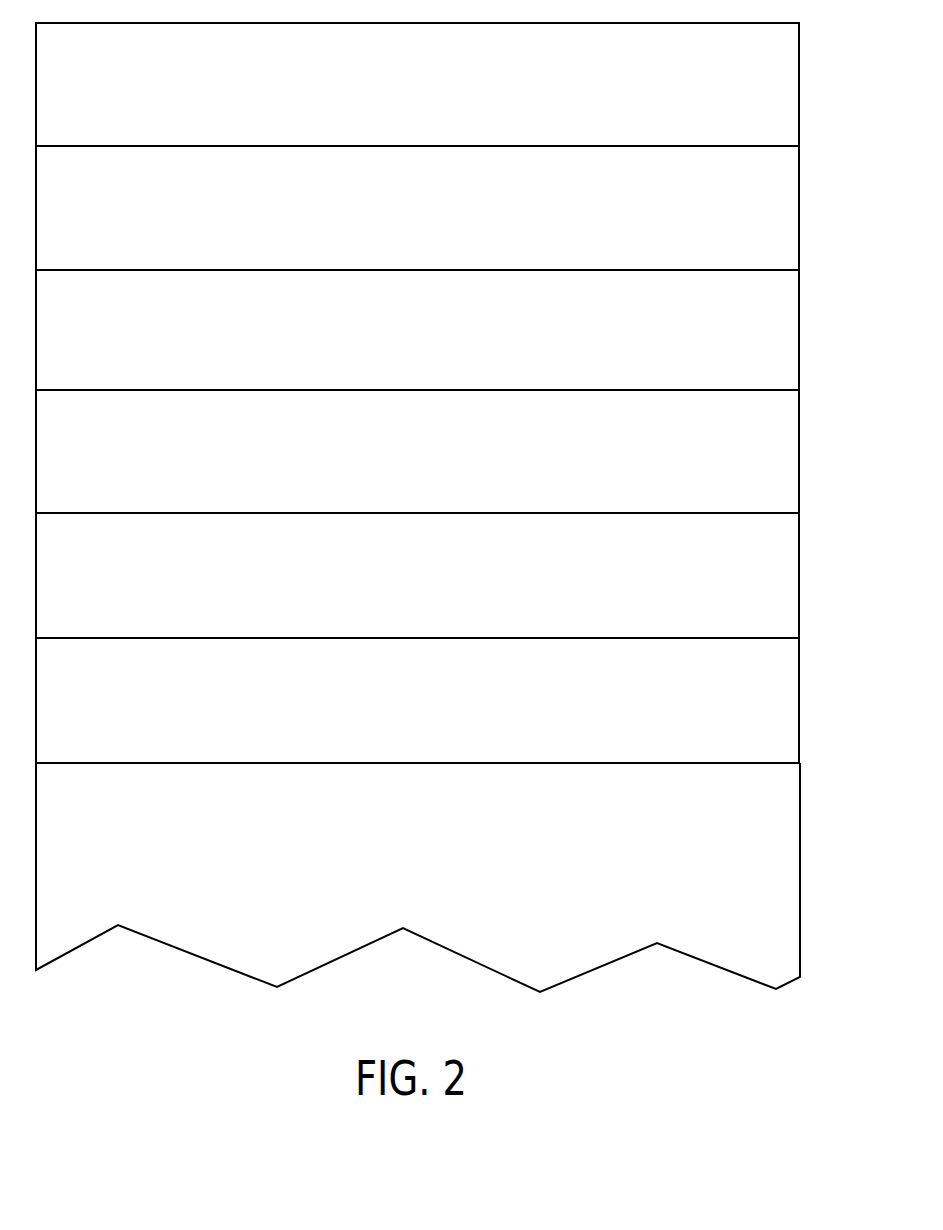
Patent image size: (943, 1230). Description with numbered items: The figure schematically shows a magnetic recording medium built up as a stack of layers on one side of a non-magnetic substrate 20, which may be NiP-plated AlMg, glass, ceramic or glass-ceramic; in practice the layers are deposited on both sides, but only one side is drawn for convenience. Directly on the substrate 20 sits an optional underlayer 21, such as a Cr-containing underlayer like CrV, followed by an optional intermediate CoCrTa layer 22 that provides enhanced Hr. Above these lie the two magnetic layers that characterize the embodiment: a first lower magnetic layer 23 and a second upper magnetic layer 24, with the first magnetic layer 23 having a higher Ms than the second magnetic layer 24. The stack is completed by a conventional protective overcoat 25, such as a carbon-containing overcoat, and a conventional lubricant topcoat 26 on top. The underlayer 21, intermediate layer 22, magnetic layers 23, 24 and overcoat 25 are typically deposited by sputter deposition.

The non-magnetic substrate 20 is at (797, 827).
The underlayer 21 is at (797, 696).
The intermediate CoCrTa layer 22 is at (797, 573).
The first lower magnetic layer 23 is at (797, 456).
The second upper magnetic layer 24 is at (797, 331).
The protective overcoat 25 is at (797, 199).
The lubricant topcoat 26 is at (797, 86).